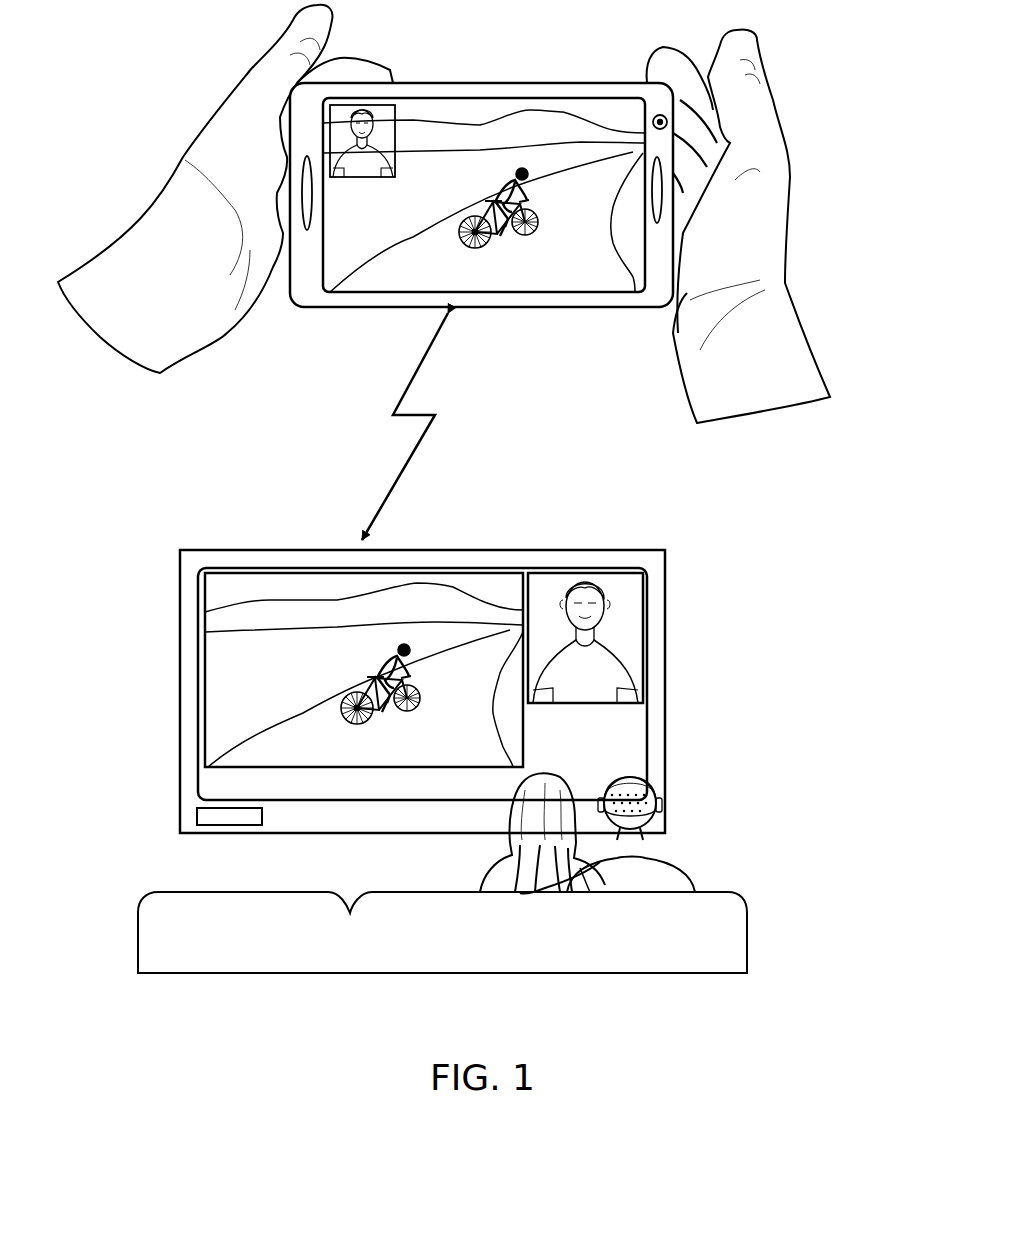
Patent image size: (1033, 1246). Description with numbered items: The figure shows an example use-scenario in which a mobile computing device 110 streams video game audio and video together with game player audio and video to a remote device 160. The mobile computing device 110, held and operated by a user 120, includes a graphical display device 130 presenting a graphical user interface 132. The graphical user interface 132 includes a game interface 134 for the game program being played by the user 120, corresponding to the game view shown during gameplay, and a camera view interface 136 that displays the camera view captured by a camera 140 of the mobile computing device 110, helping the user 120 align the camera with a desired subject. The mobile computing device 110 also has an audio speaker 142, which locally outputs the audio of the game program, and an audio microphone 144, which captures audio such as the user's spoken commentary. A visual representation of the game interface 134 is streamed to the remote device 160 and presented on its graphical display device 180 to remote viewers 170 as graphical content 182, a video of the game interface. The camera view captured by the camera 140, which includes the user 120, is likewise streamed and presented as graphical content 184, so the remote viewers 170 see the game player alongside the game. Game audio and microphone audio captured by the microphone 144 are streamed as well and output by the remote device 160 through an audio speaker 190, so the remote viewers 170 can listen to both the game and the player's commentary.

The mobile computing device 110 is at (530, 84).
The user 120 is at (225, 308).
The graphical display device 130 is at (500, 268).
The graphical user interface 132 is at (484, 201).
The game interface 134 is at (490, 118).
The camera view interface 136 is at (378, 115).
The camera 140 is at (660, 117).
The audio speaker 142 is at (657, 198).
The audio microphone 144 is at (307, 227).
The remote device 160 is at (612, 557).
The remote viewers 170 is at (680, 835).
The graphical display device 180 is at (388, 782).
The graphical content 182 is at (488, 596).
The graphical content 184 is at (549, 598).
The audio speaker 190 is at (248, 817).